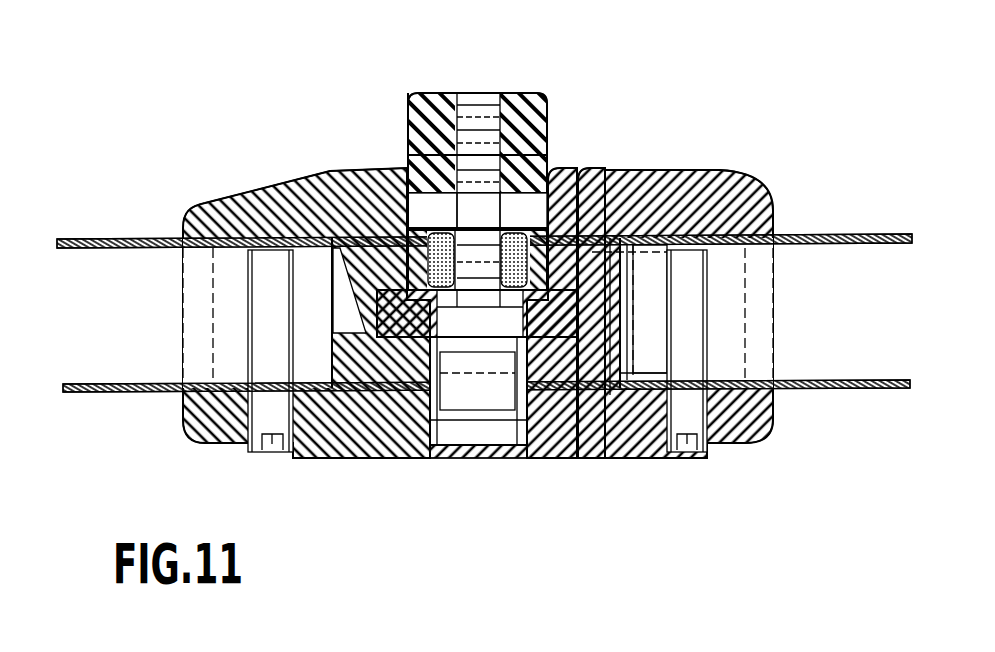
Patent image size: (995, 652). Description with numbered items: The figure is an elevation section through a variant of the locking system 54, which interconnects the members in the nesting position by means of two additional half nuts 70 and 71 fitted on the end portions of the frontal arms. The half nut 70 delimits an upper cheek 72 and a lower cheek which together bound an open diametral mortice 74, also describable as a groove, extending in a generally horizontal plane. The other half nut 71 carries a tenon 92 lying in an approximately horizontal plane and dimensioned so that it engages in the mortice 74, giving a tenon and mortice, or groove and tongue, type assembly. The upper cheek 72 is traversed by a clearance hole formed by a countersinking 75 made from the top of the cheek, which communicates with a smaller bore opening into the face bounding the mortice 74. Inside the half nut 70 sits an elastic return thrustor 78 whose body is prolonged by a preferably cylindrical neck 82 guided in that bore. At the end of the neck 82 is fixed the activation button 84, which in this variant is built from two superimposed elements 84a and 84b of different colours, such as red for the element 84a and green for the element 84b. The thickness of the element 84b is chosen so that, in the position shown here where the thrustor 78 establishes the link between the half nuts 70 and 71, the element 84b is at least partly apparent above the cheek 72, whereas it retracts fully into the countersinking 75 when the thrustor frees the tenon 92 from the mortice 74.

The locking system 54 is at (458, 480).
The half nut 70 is at (237, 193).
The half nut 71 is at (780, 197).
The upper cheek 72 is at (700, 175).
The mortice 74 is at (567, 340).
The countersinking 75 is at (362, 175).
The elastic return thrustor 78 is at (469, 74).
The neck 82 is at (408, 107).
The activation button 84 is at (535, 92).
The button element 84a is at (548, 112).
The button element 84b is at (548, 173).
The tenon 92 is at (403, 332).